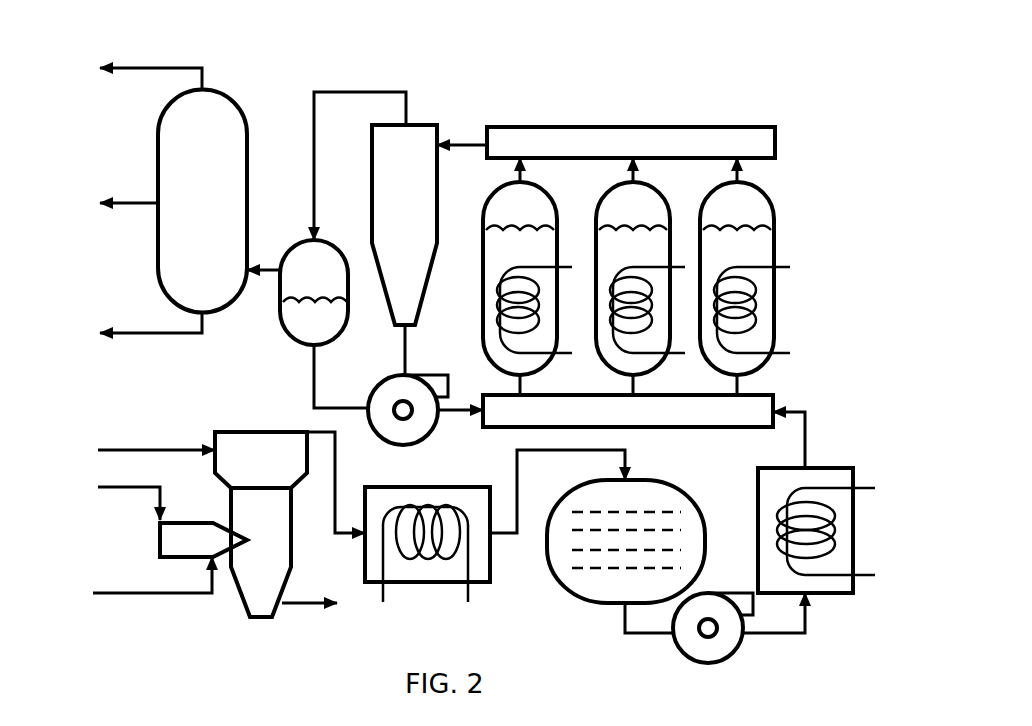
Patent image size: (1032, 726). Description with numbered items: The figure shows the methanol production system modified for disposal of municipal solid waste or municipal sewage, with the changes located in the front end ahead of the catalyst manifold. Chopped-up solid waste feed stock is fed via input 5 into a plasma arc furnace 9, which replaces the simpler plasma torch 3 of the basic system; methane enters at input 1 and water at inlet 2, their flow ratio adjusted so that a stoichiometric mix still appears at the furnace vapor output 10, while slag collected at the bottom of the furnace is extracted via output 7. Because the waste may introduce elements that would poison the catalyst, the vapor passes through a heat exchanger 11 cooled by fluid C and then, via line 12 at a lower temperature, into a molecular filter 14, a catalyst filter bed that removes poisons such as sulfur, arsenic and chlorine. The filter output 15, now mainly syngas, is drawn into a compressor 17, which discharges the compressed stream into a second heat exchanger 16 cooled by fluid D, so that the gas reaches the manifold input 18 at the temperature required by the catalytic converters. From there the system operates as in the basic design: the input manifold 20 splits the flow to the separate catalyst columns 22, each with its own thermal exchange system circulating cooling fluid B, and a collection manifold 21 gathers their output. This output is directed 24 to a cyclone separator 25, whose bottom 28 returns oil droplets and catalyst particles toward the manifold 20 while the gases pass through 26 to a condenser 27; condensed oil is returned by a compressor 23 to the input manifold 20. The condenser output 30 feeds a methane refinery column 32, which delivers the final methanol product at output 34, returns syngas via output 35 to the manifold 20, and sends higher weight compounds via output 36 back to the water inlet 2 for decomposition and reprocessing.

The methane input 1 is at (111, 497).
The water inlet 2 is at (136, 584).
The plasma torch 3 is at (190, 538).
The feed stock input 5 is at (137, 452).
The slag output 7 is at (321, 605).
The plasma arc furnace 9 is at (268, 557).
The furnace vapor output 10 is at (340, 492).
The heat exchanger 11 is at (477, 558).
The filter input line 12 is at (628, 457).
The molecular filter 14 is at (618, 583).
The filter output 15 is at (658, 637).
The heat exchanger 16 is at (812, 580).
The compressor 17 is at (705, 647).
The manifold input 18 is at (808, 443).
The input manifold 20 is at (717, 412).
The collection manifold 21 is at (737, 142).
The catalyst columns 22 is at (727, 212).
The compressor 23 is at (405, 435).
The cyclone input line 24 is at (467, 135).
The cyclone separator 25 is at (401, 195).
The cyclone gas output 26 is at (366, 90).
The condenser 27 is at (312, 278).
The cyclone bottom output 28 is at (348, 403).
The condenser output 30 is at (268, 263).
The methane refinery column 32 is at (208, 200).
The methanol product output 34 is at (106, 203).
The syngas return output 35 is at (129, 73).
The higher weight compounds output 36 is at (128, 331).
The catalyst column cooling fluid B is at (807, 309).
The cooling fluid of heat exchanger 11 C is at (426, 622).
The cooling fluid of heat exchanger 16 D is at (894, 533).